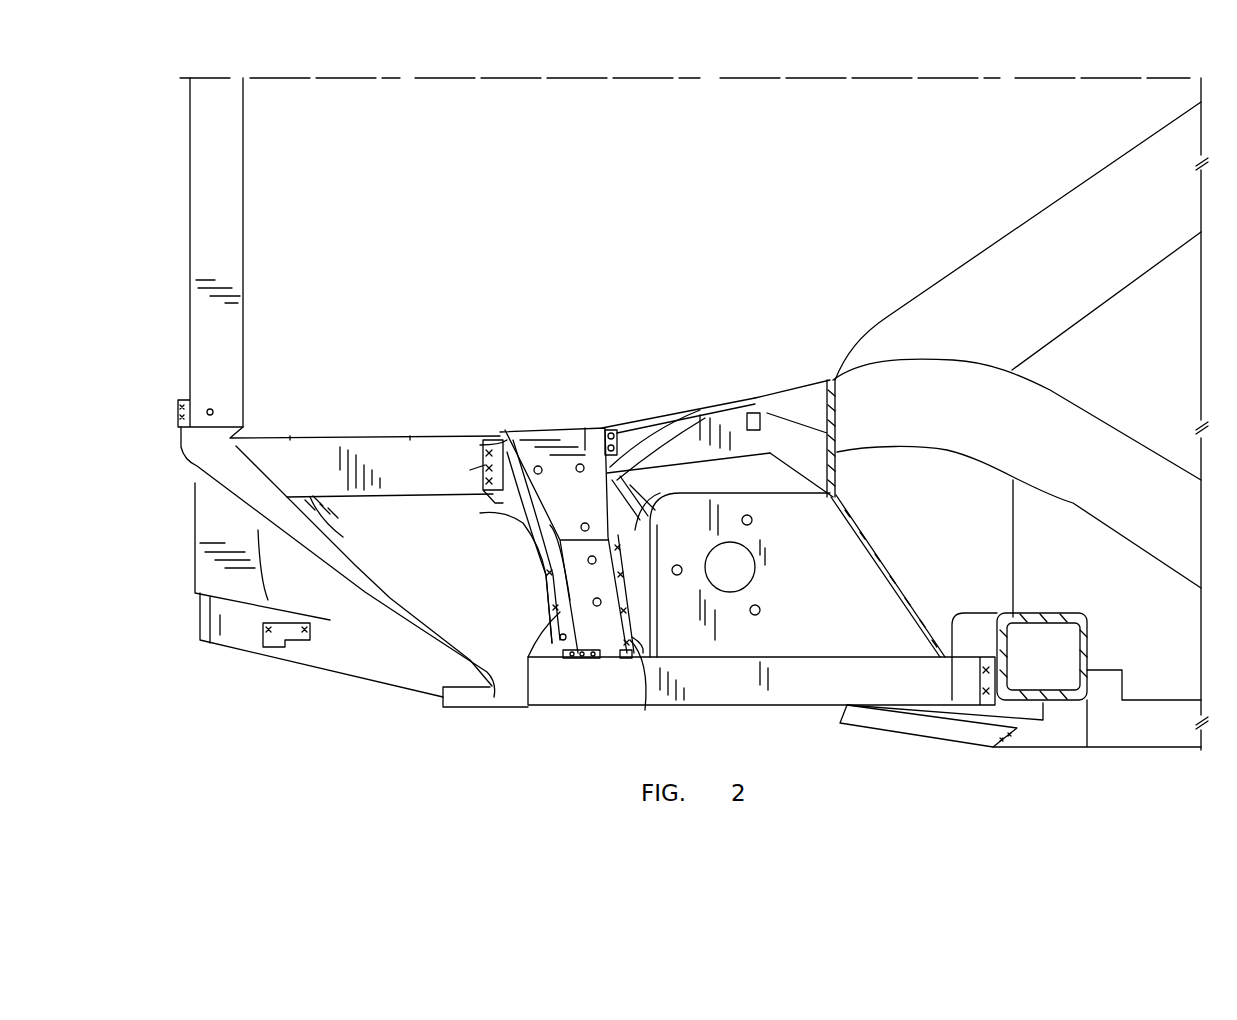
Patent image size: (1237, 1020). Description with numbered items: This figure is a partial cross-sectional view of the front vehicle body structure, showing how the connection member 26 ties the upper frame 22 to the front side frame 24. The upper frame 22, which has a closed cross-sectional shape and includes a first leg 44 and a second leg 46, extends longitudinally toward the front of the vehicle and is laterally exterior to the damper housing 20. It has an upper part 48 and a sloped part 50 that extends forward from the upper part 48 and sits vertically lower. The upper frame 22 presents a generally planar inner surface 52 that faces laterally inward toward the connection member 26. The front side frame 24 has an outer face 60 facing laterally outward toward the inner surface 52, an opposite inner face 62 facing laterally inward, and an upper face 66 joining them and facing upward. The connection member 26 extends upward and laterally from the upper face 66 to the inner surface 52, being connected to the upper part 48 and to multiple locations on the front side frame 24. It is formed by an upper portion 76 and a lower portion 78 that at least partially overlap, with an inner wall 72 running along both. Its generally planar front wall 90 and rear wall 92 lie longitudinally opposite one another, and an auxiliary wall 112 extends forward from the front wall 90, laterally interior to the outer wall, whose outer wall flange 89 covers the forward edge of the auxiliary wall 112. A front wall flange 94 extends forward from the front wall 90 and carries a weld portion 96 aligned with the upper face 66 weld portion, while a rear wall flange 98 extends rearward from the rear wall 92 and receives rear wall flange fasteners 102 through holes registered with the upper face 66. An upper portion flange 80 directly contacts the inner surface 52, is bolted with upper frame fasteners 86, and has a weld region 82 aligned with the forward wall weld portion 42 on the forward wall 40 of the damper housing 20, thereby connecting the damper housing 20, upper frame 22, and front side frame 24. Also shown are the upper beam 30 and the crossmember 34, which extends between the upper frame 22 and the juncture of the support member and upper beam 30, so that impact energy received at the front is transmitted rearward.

The damper housing 20 is at (833, 645).
The upper frame 22 is at (930, 690).
The front side frame 24 is at (415, 437).
The connection member 26 is at (556, 425).
The upper beam 30 is at (200, 233).
The crossmember 34 is at (353, 590).
The forward wall 40 is at (656, 624).
The forward wall weld portion 42 is at (645, 555).
The first leg 44 is at (975, 712).
The second leg 46 is at (912, 726).
The upper part 48 is at (750, 690).
The sloped part 50 is at (305, 655).
The inner surface 52 is at (640, 662).
The outer face 60 is at (345, 535).
The inner face 62 is at (309, 455).
The upper face 66 is at (278, 455).
The inner wall 72 is at (560, 560).
The upper portion 76 is at (593, 667).
The lower portion 78 is at (586, 428).
The upper portion flange 80 is at (633, 640).
The weld region 82 is at (640, 520).
The upper frame fasteners 86 is at (580, 653).
The outer wall flange 89 is at (470, 530).
The front wall 90 is at (512, 438).
The rear wall 92 is at (688, 417).
The front wall flange 94 is at (485, 470).
The weld portion 96 is at (482, 440).
The rear wall flange 98 is at (613, 448).
The rear wall flange fasteners 102 is at (620, 450).
The auxiliary wall 112 is at (520, 522).